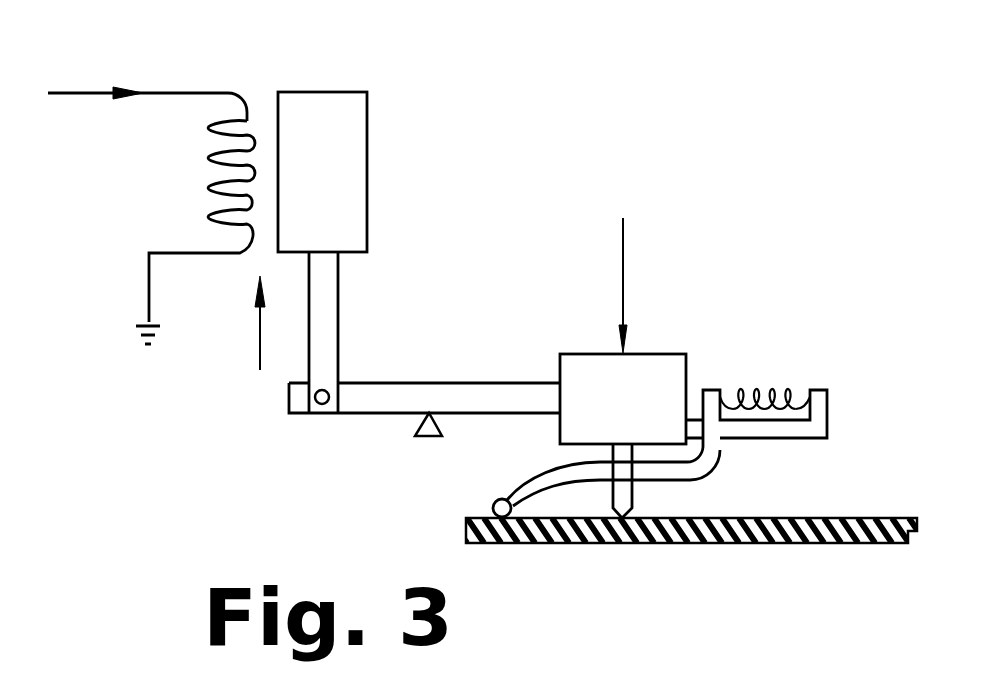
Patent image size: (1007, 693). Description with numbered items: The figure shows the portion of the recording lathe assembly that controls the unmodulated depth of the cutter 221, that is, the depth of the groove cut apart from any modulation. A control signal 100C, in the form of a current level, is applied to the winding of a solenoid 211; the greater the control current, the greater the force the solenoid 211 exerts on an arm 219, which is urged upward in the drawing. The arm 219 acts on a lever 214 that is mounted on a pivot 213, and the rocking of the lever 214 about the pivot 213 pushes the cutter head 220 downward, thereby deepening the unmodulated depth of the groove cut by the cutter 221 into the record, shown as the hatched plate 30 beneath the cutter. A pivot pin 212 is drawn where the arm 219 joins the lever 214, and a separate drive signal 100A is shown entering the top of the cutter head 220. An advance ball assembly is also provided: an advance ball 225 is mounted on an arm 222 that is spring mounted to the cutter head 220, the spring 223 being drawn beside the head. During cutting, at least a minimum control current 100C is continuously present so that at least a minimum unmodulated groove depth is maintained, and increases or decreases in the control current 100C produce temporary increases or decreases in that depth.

The control signal 100C is at (78, 90).
The solenoid 211 is at (262, 95).
The arm 219 is at (338, 286).
The lever 214 is at (455, 383).
The pivot pin 212 is at (322, 405).
The pivot 213 is at (427, 437).
The drive signal input 100A is at (624, 262).
The cutter head 220 is at (656, 353).
The spring 223 is at (755, 385).
The arm 222 is at (719, 466).
The cutter 221 is at (633, 497).
The advance ball 225 is at (493, 504).
The recording plate 30 is at (835, 517).